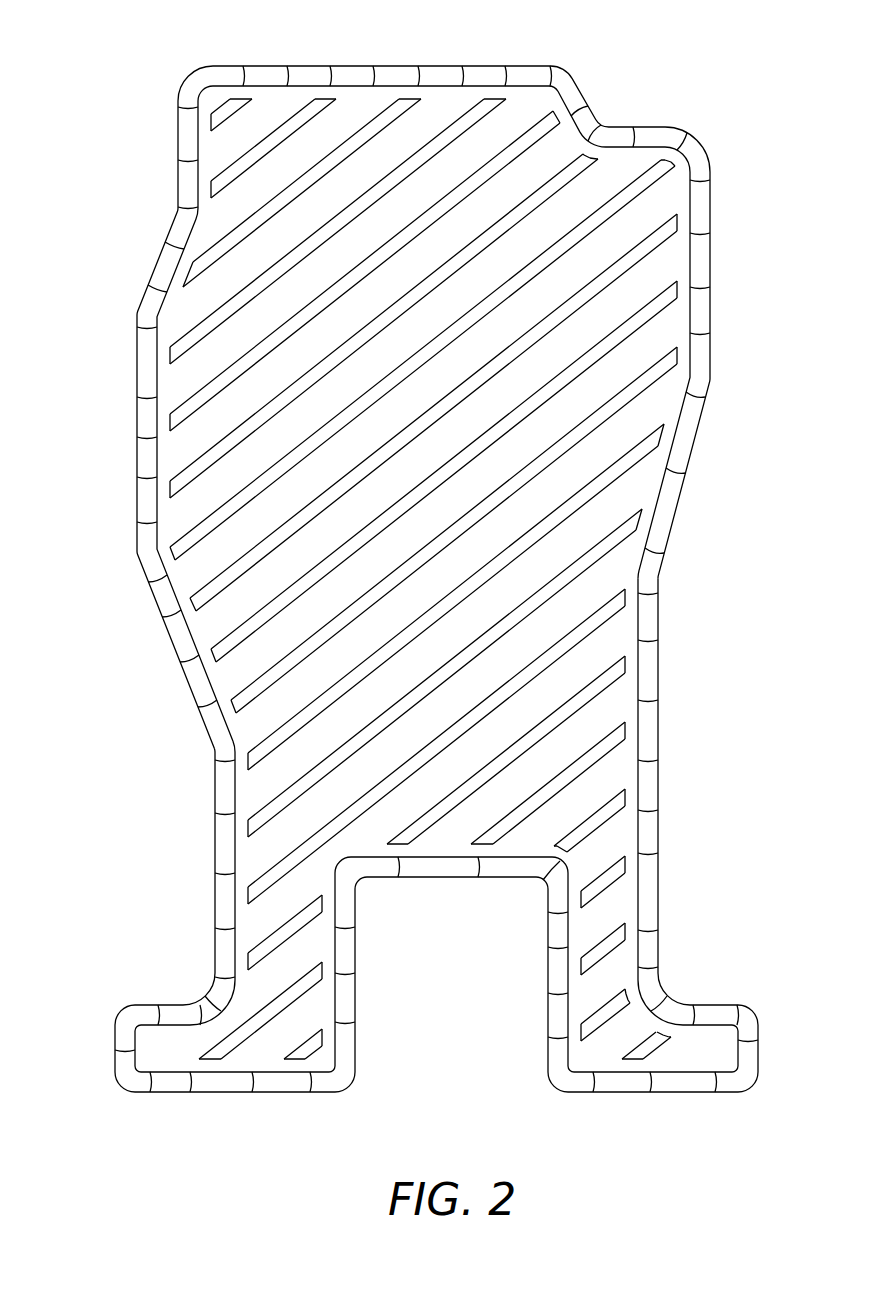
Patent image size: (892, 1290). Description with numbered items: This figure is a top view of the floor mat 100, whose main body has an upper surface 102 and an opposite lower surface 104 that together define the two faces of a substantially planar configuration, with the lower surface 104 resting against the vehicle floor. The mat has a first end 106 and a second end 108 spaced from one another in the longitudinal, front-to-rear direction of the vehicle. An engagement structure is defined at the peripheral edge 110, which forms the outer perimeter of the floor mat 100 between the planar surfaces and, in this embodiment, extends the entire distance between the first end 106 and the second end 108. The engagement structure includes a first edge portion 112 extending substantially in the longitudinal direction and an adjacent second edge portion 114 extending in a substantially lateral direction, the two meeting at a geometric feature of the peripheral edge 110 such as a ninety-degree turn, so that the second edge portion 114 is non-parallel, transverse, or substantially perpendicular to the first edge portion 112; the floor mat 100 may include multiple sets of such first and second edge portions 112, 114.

The floor mat 100 is at (124, 70).
The upper surface 102 is at (163, 425).
The lower surface 104 is at (137, 357).
The first end 106 is at (399, 66).
The second end 108 is at (295, 1092).
The peripheral edge 110 is at (703, 365).
The first edge portion 112 is at (215, 901).
The second edge portion 114 is at (141, 1005).